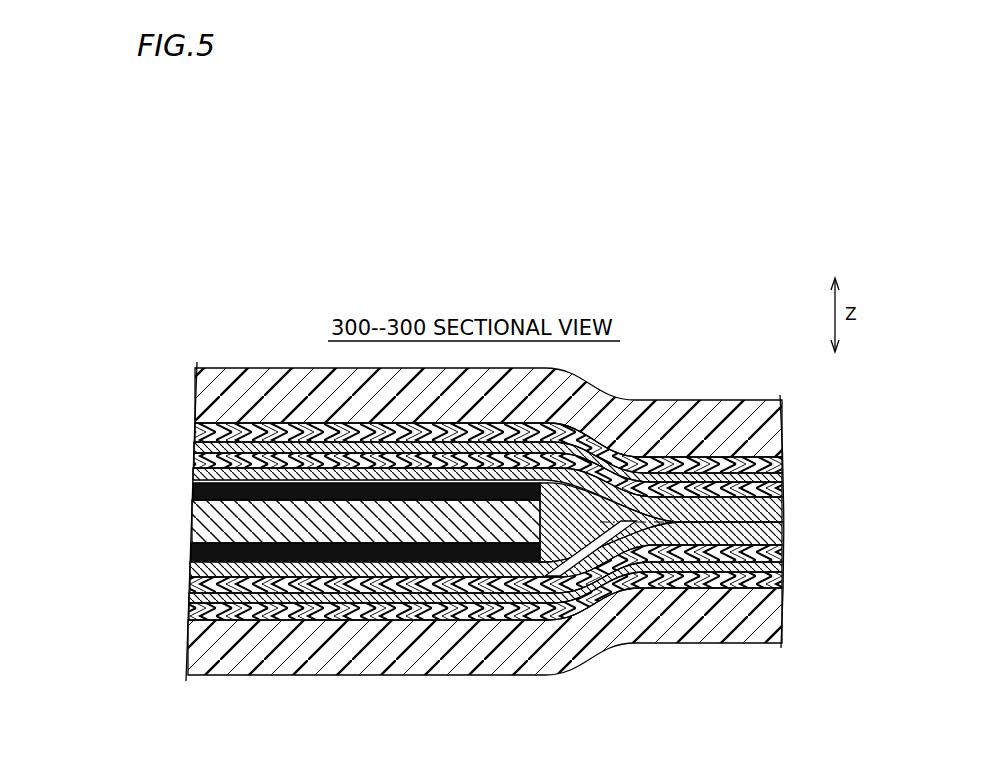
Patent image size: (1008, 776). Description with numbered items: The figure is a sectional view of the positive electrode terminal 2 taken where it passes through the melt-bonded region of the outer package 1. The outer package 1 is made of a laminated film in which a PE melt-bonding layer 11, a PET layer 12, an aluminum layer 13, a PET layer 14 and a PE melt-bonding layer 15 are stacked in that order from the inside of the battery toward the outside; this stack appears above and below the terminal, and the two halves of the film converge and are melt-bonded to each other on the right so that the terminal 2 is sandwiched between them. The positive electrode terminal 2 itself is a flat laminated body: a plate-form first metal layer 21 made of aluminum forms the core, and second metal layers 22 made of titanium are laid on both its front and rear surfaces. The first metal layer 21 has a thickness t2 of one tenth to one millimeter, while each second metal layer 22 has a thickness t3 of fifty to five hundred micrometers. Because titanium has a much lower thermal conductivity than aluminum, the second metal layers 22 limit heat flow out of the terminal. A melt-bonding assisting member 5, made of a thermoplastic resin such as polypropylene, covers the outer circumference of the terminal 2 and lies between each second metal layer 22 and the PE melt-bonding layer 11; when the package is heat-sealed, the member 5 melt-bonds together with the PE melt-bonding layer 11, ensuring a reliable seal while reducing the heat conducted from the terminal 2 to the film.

The outer package 1 is at (678, 297).
The positive electrode terminal 2 is at (302, 463).
The melt-bonding assisting member 5 is at (592, 492).
The PE melt-bonding layer 11 is at (782, 512).
The PET layer 12 is at (785, 490).
The aluminum layer 13 is at (785, 477).
The PET layer 14 is at (785, 463).
The PE melt-bonding layer 15 is at (785, 428).
The first metal layer 21 is at (192, 512).
The second metal layer 22 is at (192, 484).
The thickness of first metal layer t2 is at (190, 543).
The thickness of second metal layer t3 is at (190, 560).